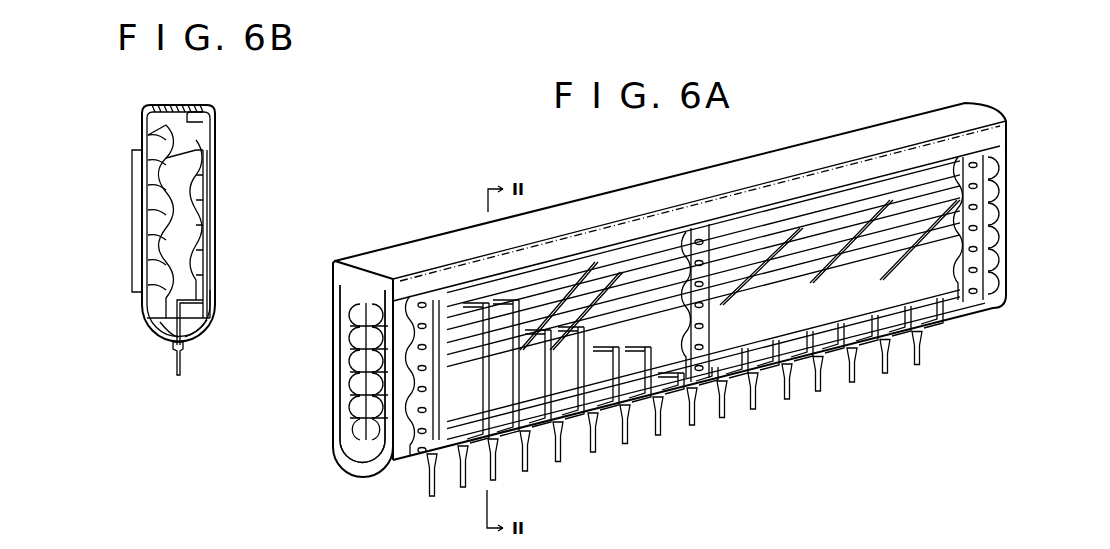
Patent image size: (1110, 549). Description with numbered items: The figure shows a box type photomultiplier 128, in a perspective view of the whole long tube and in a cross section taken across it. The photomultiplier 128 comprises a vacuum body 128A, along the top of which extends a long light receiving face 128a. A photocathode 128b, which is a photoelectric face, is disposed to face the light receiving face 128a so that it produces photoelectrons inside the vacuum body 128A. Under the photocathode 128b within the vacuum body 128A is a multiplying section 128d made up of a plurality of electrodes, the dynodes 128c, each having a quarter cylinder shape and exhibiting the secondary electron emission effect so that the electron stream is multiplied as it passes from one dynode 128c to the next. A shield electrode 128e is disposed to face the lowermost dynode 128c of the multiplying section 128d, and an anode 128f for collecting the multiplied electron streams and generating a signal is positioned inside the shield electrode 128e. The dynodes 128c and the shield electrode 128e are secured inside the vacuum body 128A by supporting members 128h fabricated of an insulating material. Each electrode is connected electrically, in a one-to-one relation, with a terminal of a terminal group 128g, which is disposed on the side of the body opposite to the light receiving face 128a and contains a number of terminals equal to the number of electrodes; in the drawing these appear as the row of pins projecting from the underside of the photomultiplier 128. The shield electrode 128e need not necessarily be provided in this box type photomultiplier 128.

In FIG. 6B, the photomultiplier 128 is at (139, 133).
In FIG. 6A, the photomultiplier 128 is at (985, 97).
In FIG. 6B, the light receiving face 128a is at (172, 105).
In FIG. 6A, the light receiving face 128a is at (737, 175).
In FIG. 6B, the photocathode 128b is at (216, 122).
In FIG. 6A, the photocathode 128b is at (668, 222).
In FIG. 6B, the dynode 128c is at (133, 200).
In FIG. 6A, the dynode 128c is at (1010, 152).
In FIG. 6B, the multiplying section 128d is at (140, 215).
In FIG. 6A, the multiplying section 128d is at (333, 362).
In FIG. 6B, the shield electrode 128e is at (217, 296).
In FIG. 6A, the shield electrode 128e is at (333, 325).
In FIG. 6B, the anode 128f is at (213, 312).
In FIG. 6B, the terminal group 128g is at (183, 363).
In FIG. 6A, the terminal group 128g is at (428, 497).
In FIG. 6B, the supporting member 128h is at (215, 160).
In FIG. 6A, the supporting member 128h is at (423, 452).
In FIG. 6B, the vacuum body 128A is at (215, 128).
In FIG. 6A, the vacuum body 128A is at (940, 325).